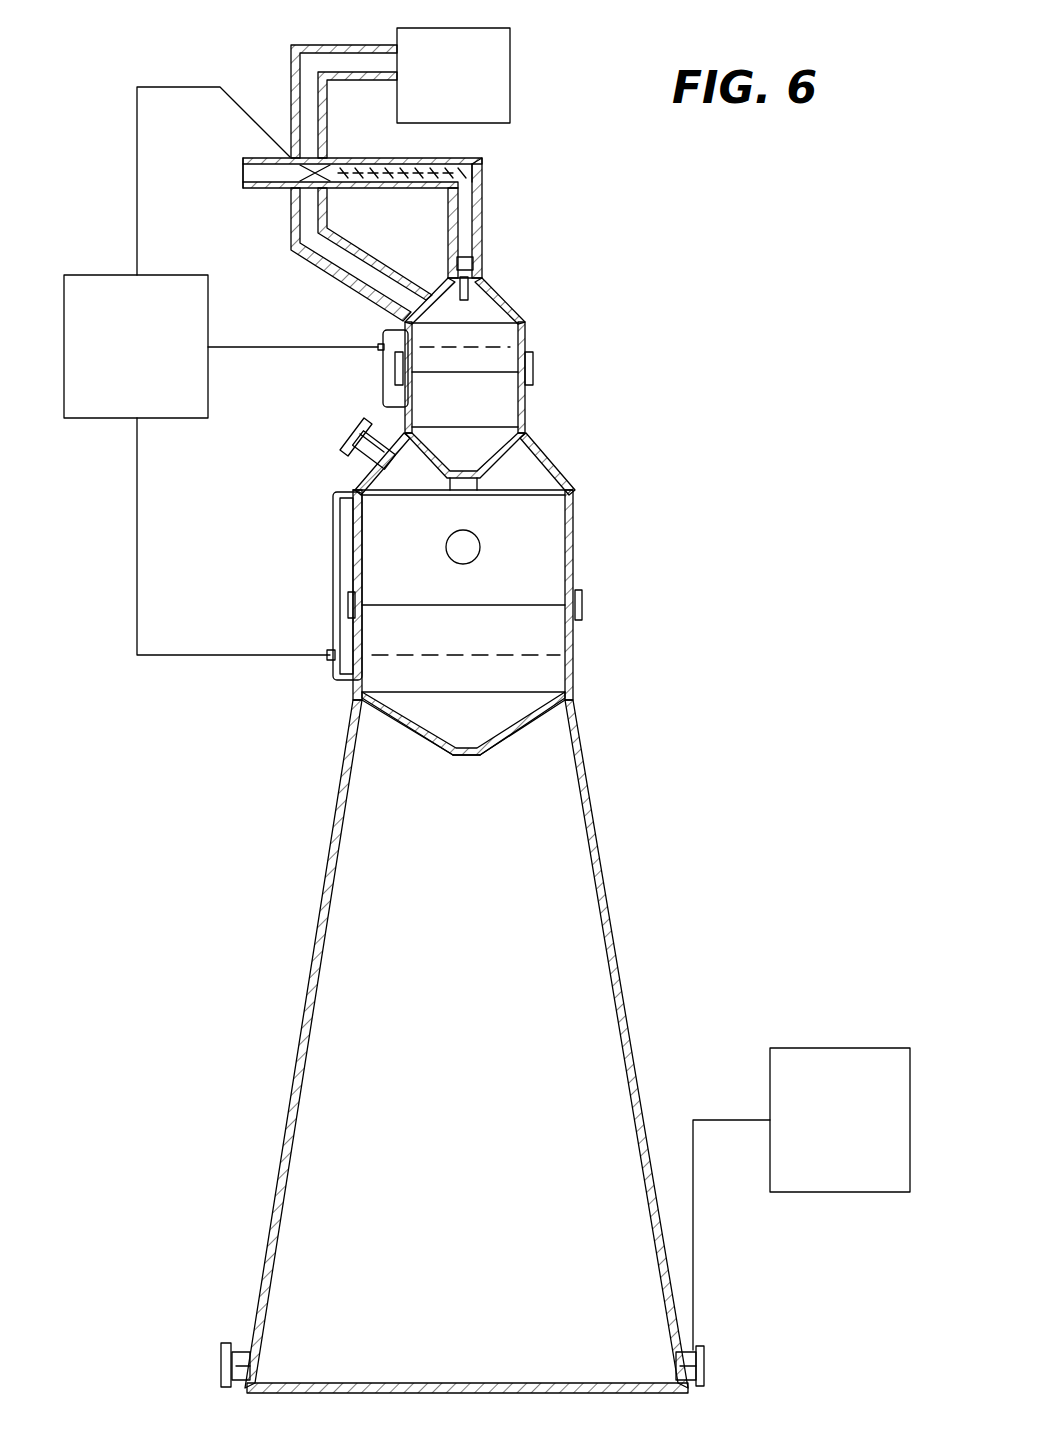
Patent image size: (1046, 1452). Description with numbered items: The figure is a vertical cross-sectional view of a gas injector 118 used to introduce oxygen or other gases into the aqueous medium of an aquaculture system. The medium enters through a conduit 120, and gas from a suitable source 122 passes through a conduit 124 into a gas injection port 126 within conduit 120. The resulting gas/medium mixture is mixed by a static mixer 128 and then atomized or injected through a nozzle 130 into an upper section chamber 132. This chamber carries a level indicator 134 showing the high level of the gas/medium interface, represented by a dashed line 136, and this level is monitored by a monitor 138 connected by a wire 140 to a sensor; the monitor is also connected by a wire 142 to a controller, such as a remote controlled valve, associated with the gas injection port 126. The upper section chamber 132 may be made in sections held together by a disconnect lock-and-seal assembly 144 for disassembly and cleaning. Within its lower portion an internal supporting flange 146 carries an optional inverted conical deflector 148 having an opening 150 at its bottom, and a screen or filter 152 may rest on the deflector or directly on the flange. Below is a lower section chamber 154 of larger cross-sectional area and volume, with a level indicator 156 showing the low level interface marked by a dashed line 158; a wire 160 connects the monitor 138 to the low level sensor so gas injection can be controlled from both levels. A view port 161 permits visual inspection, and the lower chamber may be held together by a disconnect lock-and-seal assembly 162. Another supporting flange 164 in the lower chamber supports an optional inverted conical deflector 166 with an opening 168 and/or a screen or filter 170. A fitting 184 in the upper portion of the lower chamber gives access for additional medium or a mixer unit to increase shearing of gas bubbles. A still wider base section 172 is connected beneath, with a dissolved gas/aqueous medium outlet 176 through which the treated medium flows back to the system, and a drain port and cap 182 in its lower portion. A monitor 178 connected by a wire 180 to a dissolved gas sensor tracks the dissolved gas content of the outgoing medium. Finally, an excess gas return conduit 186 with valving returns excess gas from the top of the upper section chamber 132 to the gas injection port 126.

The gas injector 118 is at (292, 881).
The conduit 120 is at (275, 181).
The gas source 122 is at (510, 62).
The conduit 124 is at (291, 93).
The gas injection port 126 is at (290, 183).
The static mixer 128 is at (430, 163).
The nozzle 130 is at (472, 297).
The upper section chamber 132 is at (500, 398).
The level indicator 134 is at (385, 372).
The dashed line 136 is at (490, 348).
The monitor 138 is at (153, 361).
The wire 140 is at (275, 300).
The wire 142 is at (137, 193).
The disconnect lock-and-seal assembly 144 is at (533, 370).
The supporting flange 146 is at (550, 458).
The inverted conical deflector 148 is at (565, 488).
The opening 150 is at (472, 486).
The screen or filter 152 is at (505, 425).
The lower section chamber 154 is at (545, 562).
The level indicator 156 is at (333, 552).
The dashed line 158 is at (510, 658).
The wire 160 is at (183, 660).
The view port 161 is at (456, 563).
The disconnect lock-and-seal assembly 162 is at (583, 607).
The supporting flange 164 is at (575, 702).
The inverted conical deflector 166 is at (410, 748).
The opening 168 is at (470, 757).
The screen or filter 170 is at (505, 725).
The base section 172 is at (585, 948).
The dissolved gas/aqueous medium outlet 176 is at (678, 1368).
The monitor 178 is at (855, 1138).
The wire 180 is at (695, 1278).
The drain port and cap 182 is at (255, 1362).
The fitting 184 is at (342, 445).
The excess gas return conduit 186 is at (375, 265).